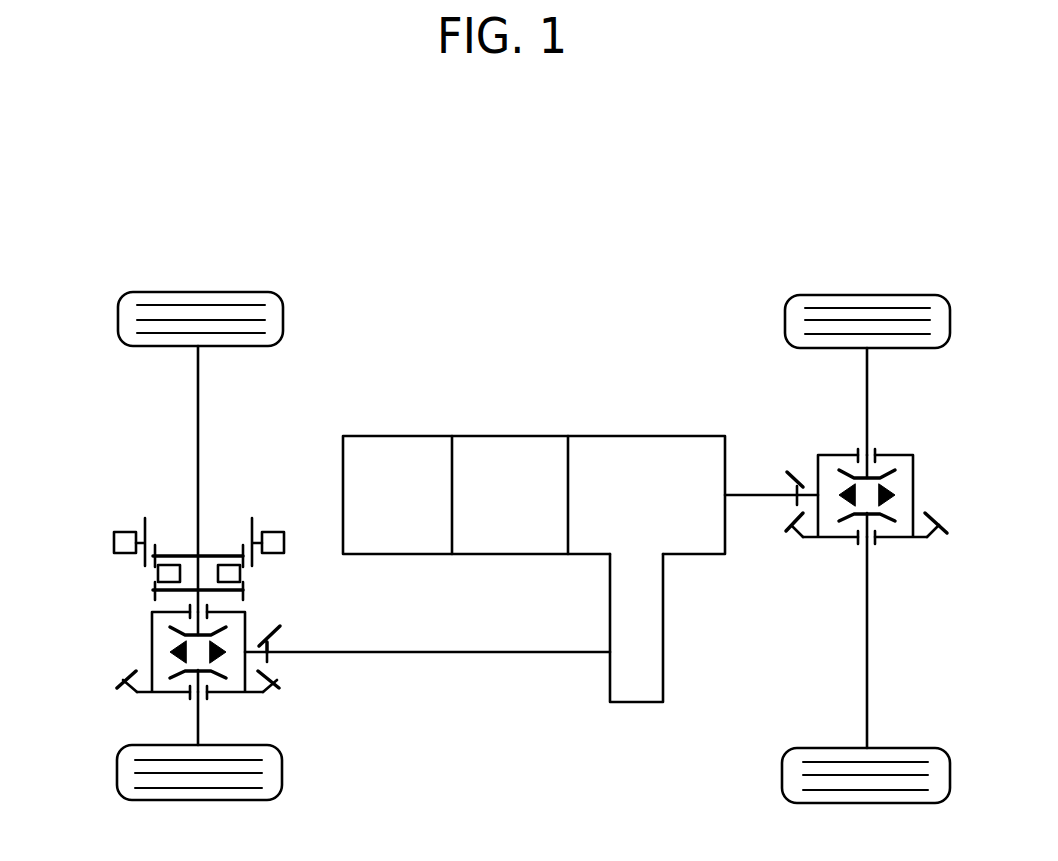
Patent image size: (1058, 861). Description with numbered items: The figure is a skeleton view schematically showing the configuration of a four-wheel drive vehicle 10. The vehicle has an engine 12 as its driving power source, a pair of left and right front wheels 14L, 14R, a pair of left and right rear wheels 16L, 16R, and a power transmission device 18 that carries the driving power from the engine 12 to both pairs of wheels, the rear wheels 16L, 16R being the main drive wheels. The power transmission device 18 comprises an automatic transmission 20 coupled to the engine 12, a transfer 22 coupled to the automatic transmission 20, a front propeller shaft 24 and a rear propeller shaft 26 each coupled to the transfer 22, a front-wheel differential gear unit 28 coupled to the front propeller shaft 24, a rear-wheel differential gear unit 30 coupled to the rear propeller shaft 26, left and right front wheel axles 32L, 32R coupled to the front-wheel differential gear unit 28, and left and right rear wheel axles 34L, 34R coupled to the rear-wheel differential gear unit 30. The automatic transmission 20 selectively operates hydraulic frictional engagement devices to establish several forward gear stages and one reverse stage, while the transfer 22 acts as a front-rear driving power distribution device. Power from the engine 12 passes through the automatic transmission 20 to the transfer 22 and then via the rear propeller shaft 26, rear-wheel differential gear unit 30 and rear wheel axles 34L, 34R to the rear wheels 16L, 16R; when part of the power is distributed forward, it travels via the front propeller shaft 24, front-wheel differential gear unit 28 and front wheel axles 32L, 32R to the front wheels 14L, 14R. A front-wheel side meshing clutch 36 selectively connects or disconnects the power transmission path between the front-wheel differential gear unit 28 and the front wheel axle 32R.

The four-wheel drive vehicle 10 is at (773, 187).
The engine 12 is at (371, 447).
The right front wheel 14R is at (166, 311).
The left front wheel 14L is at (165, 780).
The right rear wheel 16R is at (848, 318).
The left rear wheel 16L is at (847, 782).
The power transmission device 18 is at (629, 745).
The automatic transmission 20 is at (490, 447).
The transfer 22 is at (630, 447).
The front propeller shaft 24 is at (421, 655).
The rear propeller shaft 26 is at (752, 493).
The front-wheel differential gear unit 28 is at (117, 714).
The rear-wheel differential gear unit 30 is at (902, 547).
The right front wheel axle 32R is at (200, 402).
The left front wheel axle 32L is at (200, 730).
The right rear wheel axle 34R is at (869, 395).
The left rear wheel axle 34L is at (869, 690).
The front-wheel side meshing clutch 36 is at (138, 573).